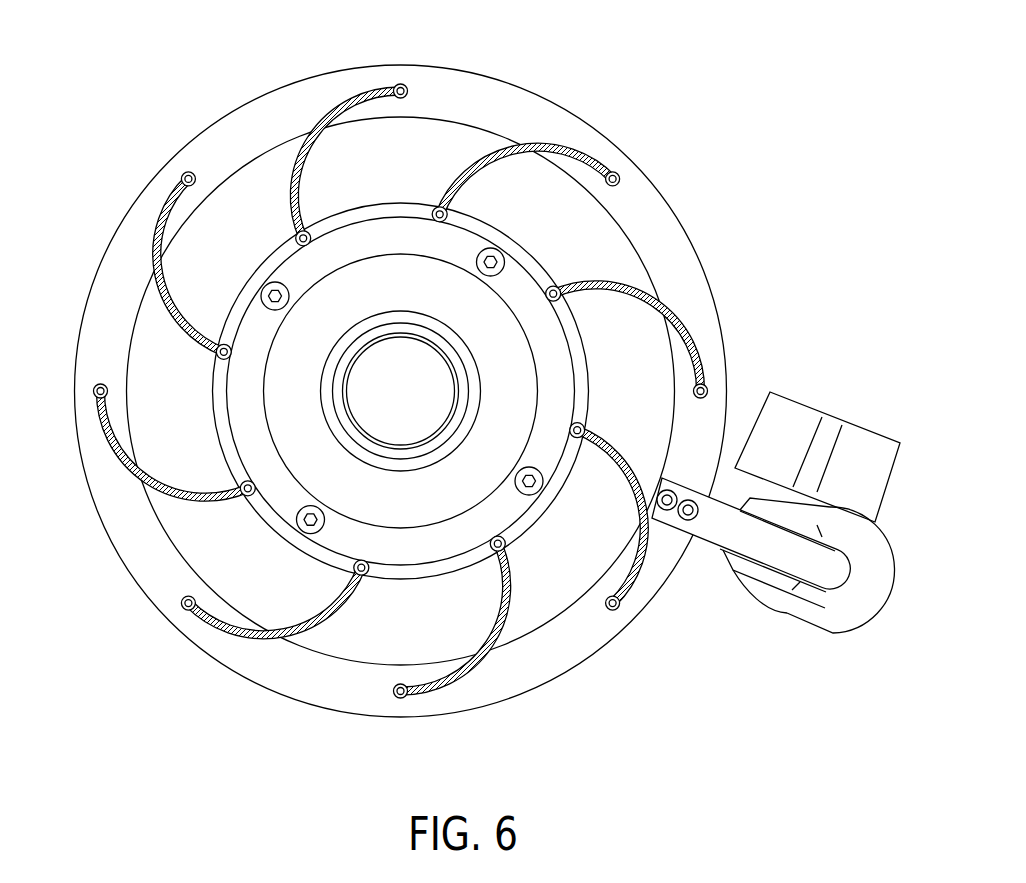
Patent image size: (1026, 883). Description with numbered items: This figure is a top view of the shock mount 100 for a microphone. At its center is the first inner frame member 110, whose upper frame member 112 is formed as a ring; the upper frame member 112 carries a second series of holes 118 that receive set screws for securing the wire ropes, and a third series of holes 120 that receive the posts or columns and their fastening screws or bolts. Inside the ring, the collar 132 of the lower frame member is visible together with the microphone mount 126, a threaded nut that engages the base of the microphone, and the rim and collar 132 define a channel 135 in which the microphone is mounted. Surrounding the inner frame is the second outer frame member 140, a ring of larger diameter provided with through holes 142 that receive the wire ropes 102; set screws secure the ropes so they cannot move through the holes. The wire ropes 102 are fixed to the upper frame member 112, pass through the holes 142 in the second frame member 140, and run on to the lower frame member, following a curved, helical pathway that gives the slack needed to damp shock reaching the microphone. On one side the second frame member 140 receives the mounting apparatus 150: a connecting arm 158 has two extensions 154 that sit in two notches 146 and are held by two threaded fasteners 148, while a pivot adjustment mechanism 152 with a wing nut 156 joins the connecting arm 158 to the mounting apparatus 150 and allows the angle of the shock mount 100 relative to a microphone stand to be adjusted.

The shock mount 100 is at (540, 670).
The wire ropes 102 is at (346, 108).
The first inner frame member 110 is at (250, 440).
The upper frame member 112 is at (553, 338).
The second series of holes 118 is at (309, 232).
The third series of holes 120 is at (266, 288).
The microphone mount 126 is at (432, 452).
The collar 132 is at (395, 312).
The channel 135 is at (529, 391).
The second outer frame member 140 is at (670, 242).
The through holes 142 is at (400, 84).
The notches 146 is at (657, 523).
The threaded fasteners 148 is at (663, 492).
The mounting apparatus 150 is at (840, 617).
The pivot adjustment mechanism 152 is at (777, 594).
The extensions 154 is at (720, 567).
The wing nut 156 is at (862, 440).
The connecting arm 158 is at (726, 512).